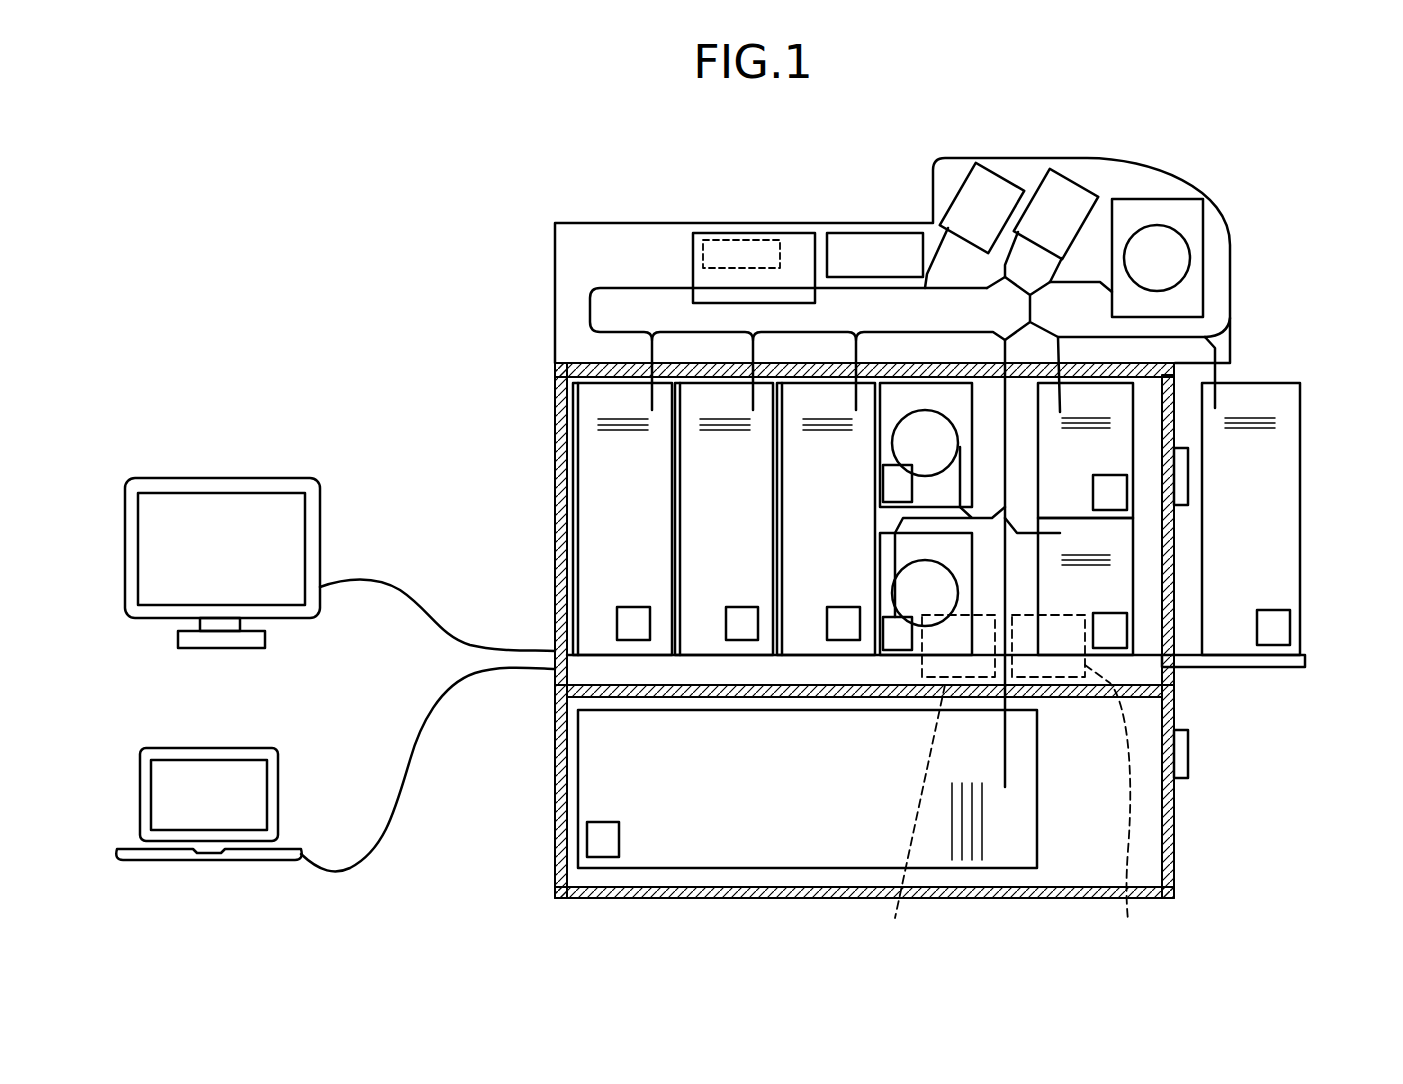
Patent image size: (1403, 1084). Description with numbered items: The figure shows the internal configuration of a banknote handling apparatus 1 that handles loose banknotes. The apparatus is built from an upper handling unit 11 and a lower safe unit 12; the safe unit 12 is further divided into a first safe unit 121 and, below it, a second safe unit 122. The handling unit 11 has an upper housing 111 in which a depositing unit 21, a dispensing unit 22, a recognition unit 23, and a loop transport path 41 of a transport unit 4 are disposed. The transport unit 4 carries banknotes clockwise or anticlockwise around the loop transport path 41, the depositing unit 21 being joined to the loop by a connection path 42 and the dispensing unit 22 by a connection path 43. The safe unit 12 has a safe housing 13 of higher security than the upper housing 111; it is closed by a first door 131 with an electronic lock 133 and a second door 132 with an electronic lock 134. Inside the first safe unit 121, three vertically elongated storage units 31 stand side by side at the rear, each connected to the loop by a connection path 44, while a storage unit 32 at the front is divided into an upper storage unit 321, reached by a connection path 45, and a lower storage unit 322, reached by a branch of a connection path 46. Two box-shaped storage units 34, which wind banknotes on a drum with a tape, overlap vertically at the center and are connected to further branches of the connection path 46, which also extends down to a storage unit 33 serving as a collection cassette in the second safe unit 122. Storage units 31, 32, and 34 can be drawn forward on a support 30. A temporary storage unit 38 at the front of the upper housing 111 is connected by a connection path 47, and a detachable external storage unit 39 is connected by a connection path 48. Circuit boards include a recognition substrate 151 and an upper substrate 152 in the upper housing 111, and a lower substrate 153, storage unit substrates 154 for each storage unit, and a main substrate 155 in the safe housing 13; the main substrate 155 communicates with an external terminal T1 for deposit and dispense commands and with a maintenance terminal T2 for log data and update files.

The banknote handling apparatus 1 is at (418, 237).
The handling unit 11 is at (540, 255).
The safe unit 12 is at (537, 551).
The safe housing 13 is at (1045, 898).
The upper housing 111 is at (1230, 345).
The first safe unit 121 is at (553, 449).
The second safe unit 122 is at (557, 785).
The first door 131 is at (1175, 573).
The second door 132 is at (1173, 848).
The electronic lock 133 is at (1188, 466).
The electronic lock 134 is at (1188, 755).
The transport unit 4 is at (605, 277).
The loop transport path 41 is at (648, 288).
The connection path 42 is at (937, 247).
The connection path 43 is at (1003, 257).
The connection path 44 is at (650, 353).
The connection path 45 is at (1060, 342).
The connection path 46 is at (1005, 660).
The connection path 47 is at (1075, 283).
The connection path 48 is at (1230, 318).
The depositing unit 21 is at (1000, 172).
The dispensing unit 22 is at (1078, 178).
The recognition unit 23 is at (757, 233).
The recognition substrate 151 is at (718, 240).
The upper substrate 152 is at (875, 233).
The lower substrate 153 is at (1121, 810).
The storage unit substrate 154 is at (890, 465).
The main substrate 155 is at (906, 821).
The temporary storage unit 38 is at (1190, 257).
The external storage unit 39 is at (1300, 457).
The support 30 is at (593, 670).
The storage unit 31 is at (724, 519).
The storage unit 32 is at (1143, 519).
The upper storage unit 321 is at (1085, 450).
The lower storage unit 322 is at (1085, 586).
The storage unit 33 is at (807, 789).
The storage unit 34 is at (926, 519).
The external terminal T1 is at (150, 478).
The maintenance terminal T2 is at (157, 748).